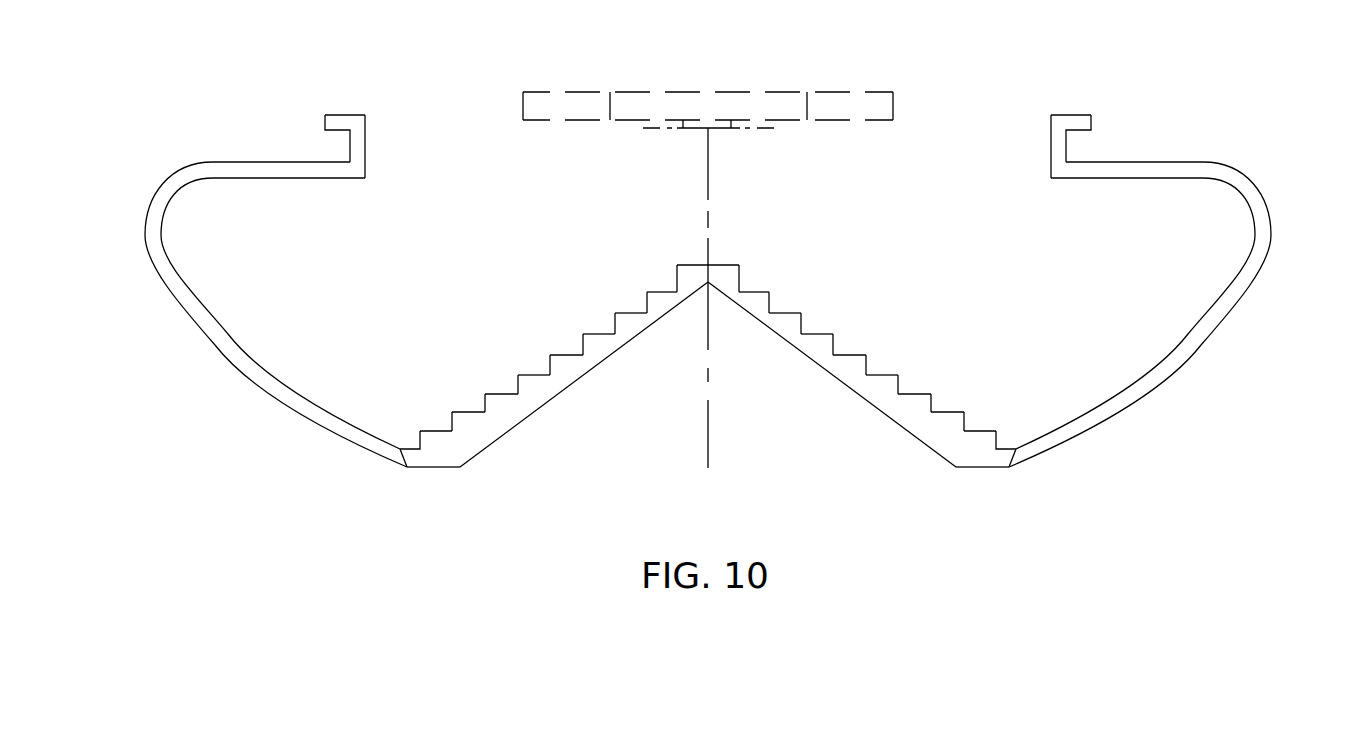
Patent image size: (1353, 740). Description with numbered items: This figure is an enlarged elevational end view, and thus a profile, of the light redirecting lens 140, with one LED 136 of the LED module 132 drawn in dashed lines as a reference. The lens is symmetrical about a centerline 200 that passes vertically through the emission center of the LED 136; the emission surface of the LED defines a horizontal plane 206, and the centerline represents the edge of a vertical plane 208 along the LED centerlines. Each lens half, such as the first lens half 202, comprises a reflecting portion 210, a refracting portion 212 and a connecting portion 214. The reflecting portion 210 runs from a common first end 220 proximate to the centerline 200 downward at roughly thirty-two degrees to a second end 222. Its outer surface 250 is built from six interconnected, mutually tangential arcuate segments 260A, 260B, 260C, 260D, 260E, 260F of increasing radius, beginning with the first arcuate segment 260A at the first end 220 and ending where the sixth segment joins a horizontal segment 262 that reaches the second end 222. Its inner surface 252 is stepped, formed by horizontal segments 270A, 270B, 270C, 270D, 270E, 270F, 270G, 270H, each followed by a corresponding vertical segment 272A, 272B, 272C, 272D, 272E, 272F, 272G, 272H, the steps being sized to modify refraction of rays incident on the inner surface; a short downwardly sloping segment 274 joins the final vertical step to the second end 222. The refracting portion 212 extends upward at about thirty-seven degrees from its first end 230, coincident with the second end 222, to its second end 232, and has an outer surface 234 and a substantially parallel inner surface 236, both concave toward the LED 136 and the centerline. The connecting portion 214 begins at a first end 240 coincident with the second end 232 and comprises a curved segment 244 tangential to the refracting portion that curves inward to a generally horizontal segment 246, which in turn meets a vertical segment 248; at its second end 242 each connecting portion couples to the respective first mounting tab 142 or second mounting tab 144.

The substrate 132 is at (543, 107).
The LED 136 is at (695, 130).
The light redirecting lens 140 is at (1132, 72).
The first mounting tab 142 is at (337, 121).
The second mounting tab 144 is at (1114, 131).
The centerline 200 is at (709, 199).
The first lens half 202 is at (826, 489).
The horizontal plane 206 is at (757, 130).
The vertical plane 208 is at (709, 172).
The reflecting portion 210 is at (540, 447).
The refracting portion 212 is at (708, 363).
The connecting portion 214 is at (708, 279).
The first end 220 is at (705, 263).
The second end 222 is at (408, 470).
The first end 230 is at (406, 467).
The second end 232 is at (168, 294).
The outer surface 234 is at (223, 350).
The inner surface 236 is at (240, 345).
The first end 240 is at (167, 295).
The second end 242 is at (369, 116).
The curved segment 244 is at (169, 198).
The horizontal segment 246 is at (311, 179).
The vertical segment 248 is at (366, 150).
The outer surface 250 is at (708, 374).
The inner surface 252 is at (485, 394).
The first arcuate segment 260A is at (697, 293).
The second arcuate segment 260B is at (669, 312).
The third arcuate segment 260C is at (630, 347).
The fourth arcuate segment 260D is at (582, 379).
The fifth arcuate segment 260E is at (560, 396).
The sixth arcuate segment 260F is at (497, 441).
The horizontal segment 262 is at (429, 469).
The first horizontal segment 270A is at (698, 264).
The second horizontal segment 270B is at (664, 291).
The third horizontal segment 270C is at (632, 313).
The fourth horizontal segment 270D is at (600, 334).
The fifth horizontal segment 270E is at (570, 355).
The sixth horizontal segment 270F is at (548, 358).
The seventh horizontal segment 270G is at (485, 393).
The eighth horizontal segment 270H is at (420, 431).
The first vertical segment 272A is at (676, 276).
The second vertical segment 272B is at (676, 287).
The third vertical segment 272C is at (614, 326).
The fourth vertical segment 272D is at (582, 348).
The fifth vertical segment 272E is at (549, 368).
The sixth vertical segment 272F is at (516, 377).
The seventh vertical segment 272G is at (452, 410).
The eighth vertical segment 272H is at (404, 455).
The sloping segment 274 is at (376, 447).